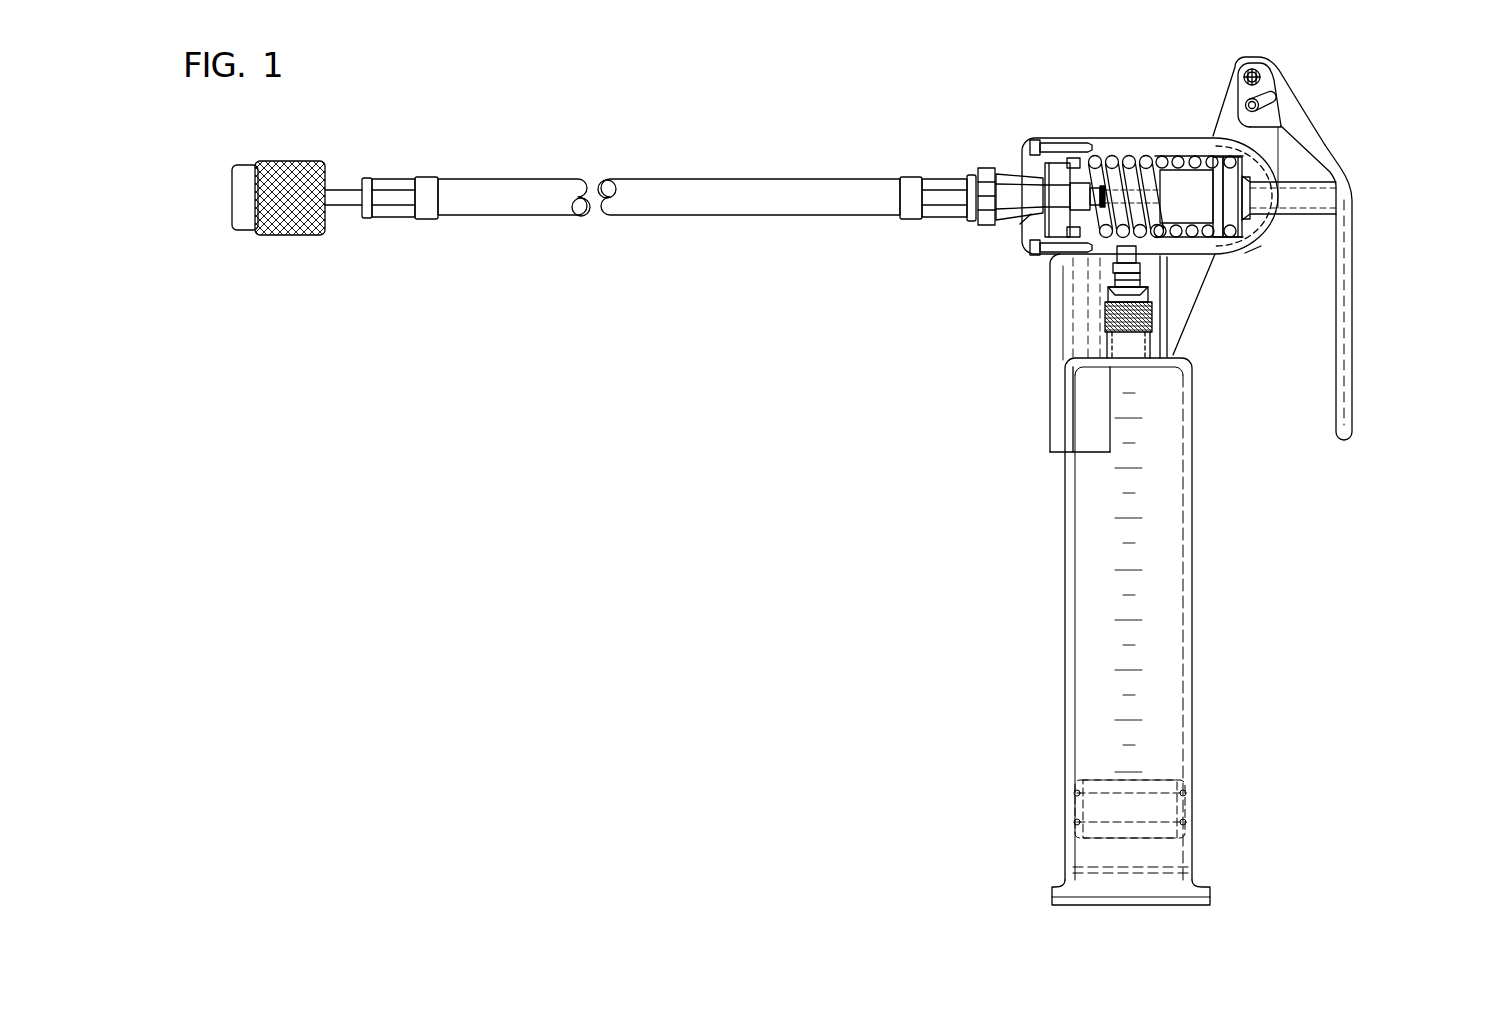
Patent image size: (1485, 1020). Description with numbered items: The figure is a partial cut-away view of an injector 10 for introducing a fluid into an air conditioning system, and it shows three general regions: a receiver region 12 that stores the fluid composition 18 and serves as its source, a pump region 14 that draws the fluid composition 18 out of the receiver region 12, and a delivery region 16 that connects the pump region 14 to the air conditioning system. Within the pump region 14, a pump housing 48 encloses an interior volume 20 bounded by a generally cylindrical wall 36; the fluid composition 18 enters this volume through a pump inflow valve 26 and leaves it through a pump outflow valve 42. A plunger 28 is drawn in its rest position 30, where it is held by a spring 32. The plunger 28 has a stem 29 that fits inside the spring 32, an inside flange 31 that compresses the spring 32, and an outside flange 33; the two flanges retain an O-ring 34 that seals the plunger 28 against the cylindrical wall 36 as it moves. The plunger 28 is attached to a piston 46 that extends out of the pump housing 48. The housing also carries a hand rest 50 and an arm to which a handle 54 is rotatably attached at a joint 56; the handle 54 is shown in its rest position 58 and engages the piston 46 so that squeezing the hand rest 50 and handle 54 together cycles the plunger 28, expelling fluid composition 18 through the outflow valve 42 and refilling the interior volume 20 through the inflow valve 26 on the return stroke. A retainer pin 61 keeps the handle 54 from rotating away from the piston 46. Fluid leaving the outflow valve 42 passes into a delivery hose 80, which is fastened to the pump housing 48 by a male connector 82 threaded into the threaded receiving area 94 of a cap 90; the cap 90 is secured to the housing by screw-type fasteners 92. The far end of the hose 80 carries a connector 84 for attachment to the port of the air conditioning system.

The injector 10 is at (916, 98).
The receiver region 12 is at (1228, 637).
The pump region 14 is at (1378, 130).
The delivery region 16 is at (557, 148).
The fluid composition 18 is at (1160, 697).
The interior volume 20 is at (1137, 172).
The pump inflow valve 26 is at (1127, 252).
The plunger 28 is at (1173, 177).
The stem 29 is at (1200, 208).
The rest position 30 is at (1208, 212).
The inside flange 31 is at (1220, 163).
The spring 32 is at (1128, 177).
The outside flange 33 is at (1238, 175).
The O-ring 34 is at (1232, 232).
The generally cylindrical wall 36 is at (1183, 238).
The pump outflow valve 42 is at (1085, 188).
The piston 46 is at (1323, 193).
The pump housing 48 is at (1261, 246).
The hand rest 50 is at (1050, 348).
The handle 54 is at (1348, 292).
The joint 56 is at (1258, 76).
The rest position 58 is at (1345, 346).
The retainer pin 61 is at (1265, 98).
The delivery hose 80 is at (726, 196).
The male connector 82 is at (1027, 192).
The connector 84 is at (294, 178).
The cap 90 is at (1020, 163).
The fasteners 92 is at (1035, 146).
The threaded receiving area 94 is at (1031, 214).